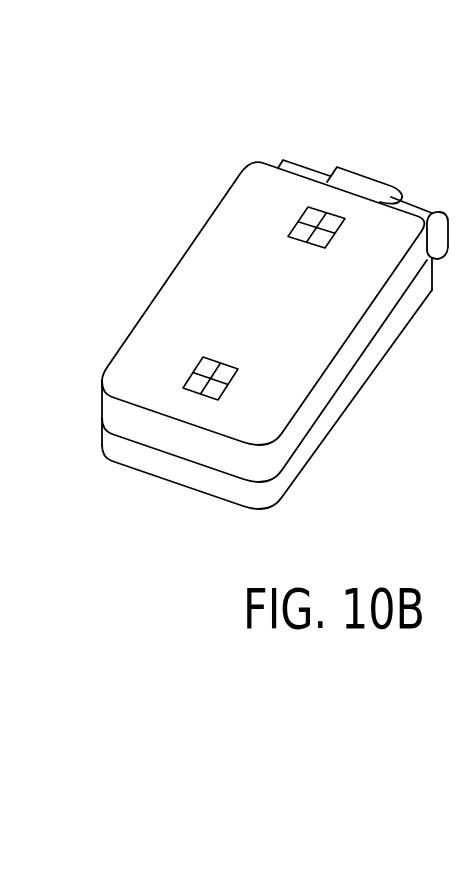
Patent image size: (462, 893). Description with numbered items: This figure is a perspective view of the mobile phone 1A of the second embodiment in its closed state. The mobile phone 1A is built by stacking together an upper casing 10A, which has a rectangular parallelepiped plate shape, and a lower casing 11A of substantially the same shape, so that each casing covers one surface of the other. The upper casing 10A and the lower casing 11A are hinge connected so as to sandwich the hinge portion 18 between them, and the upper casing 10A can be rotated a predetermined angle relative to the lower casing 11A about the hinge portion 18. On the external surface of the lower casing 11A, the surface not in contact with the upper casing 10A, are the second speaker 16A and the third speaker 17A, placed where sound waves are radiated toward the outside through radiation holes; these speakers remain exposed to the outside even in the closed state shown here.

The mobile phone 1A is at (418, 129).
The upper casing 10A is at (352, 403).
The lower casing 11A is at (171, 272).
The second speaker 16A is at (296, 229).
The third speaker 17A is at (200, 367).
The hinge portion 18 is at (298, 161).